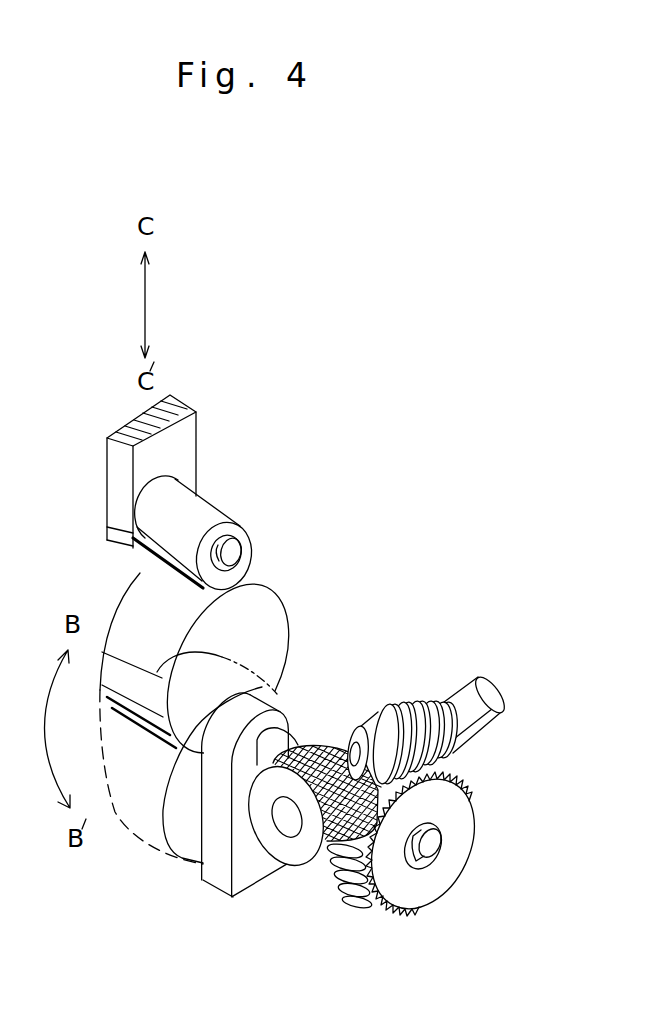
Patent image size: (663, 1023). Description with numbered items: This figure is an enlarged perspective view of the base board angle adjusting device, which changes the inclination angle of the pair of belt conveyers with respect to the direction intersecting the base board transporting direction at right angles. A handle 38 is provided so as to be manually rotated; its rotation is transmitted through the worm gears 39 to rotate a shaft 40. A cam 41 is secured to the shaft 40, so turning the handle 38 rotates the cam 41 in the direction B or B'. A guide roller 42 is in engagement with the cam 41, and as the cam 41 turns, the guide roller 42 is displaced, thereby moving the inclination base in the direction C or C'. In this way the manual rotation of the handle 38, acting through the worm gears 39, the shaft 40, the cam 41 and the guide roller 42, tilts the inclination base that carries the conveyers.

The handle 38 is at (262, 866).
The worm gears 39 is at (470, 788).
The shaft 40 is at (350, 745).
The cam 41 is at (287, 600).
The guide roller 42 is at (225, 519).